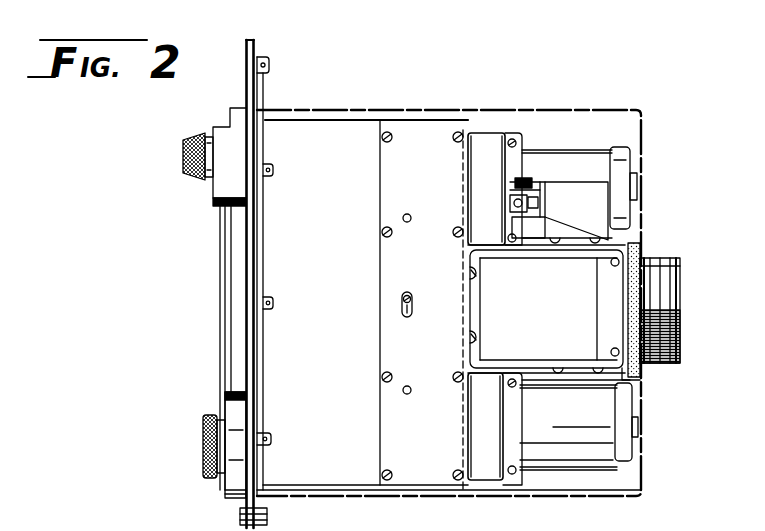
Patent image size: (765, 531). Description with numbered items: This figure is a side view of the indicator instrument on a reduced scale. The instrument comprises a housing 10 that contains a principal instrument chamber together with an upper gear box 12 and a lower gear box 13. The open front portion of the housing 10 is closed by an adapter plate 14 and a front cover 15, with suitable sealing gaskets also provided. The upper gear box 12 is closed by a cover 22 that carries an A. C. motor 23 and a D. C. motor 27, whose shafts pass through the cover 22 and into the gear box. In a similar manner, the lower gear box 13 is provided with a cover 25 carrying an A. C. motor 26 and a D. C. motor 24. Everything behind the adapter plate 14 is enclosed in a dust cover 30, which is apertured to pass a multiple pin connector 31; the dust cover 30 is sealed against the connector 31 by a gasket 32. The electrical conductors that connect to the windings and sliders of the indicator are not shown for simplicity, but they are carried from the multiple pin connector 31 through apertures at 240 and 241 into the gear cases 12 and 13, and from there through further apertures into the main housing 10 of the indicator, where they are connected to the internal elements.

The housing 10 is at (318, 118).
The upper gear box 12 is at (490, 133).
The lower gear box 13 is at (490, 474).
The adapter plate 14 is at (255, 42).
The front cover 15 is at (225, 495).
The cover 22 is at (505, 135).
The A. C. motor 23 is at (548, 150).
The D. C. motor 24 is at (630, 379).
The cover 25 is at (512, 480).
The A. C. motor 26 is at (582, 470).
The D. C. motor 27 is at (598, 180).
The dust cover 30 is at (405, 110).
The multiple pin connector 31 is at (660, 260).
The gasket 32 is at (633, 243).
The aperture 240 is at (478, 272).
The aperture 241 is at (478, 362).